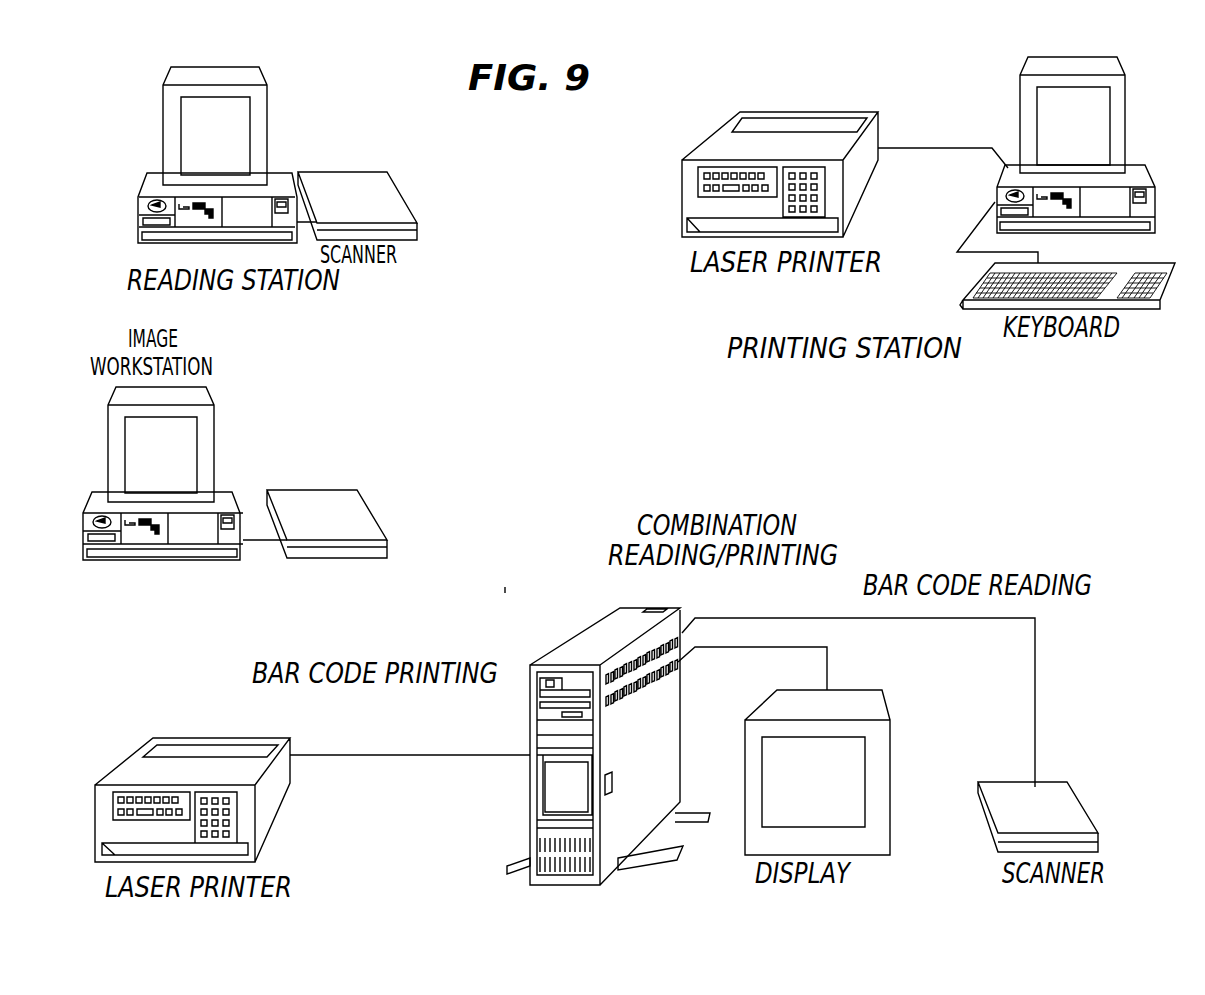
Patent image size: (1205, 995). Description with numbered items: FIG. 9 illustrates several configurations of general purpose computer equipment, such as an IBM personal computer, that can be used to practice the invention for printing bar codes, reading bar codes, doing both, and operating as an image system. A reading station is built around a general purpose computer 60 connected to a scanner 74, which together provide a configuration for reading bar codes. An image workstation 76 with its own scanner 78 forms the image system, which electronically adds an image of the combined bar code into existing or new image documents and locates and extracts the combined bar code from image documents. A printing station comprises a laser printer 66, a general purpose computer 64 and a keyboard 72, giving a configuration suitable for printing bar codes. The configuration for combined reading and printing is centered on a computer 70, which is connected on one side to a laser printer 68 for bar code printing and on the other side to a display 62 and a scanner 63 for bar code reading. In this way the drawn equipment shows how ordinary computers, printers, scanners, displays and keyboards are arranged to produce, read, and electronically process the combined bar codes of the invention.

The reading station computer 60 is at (233, 150).
The scanner 74 is at (410, 207).
The image workstation 76 is at (162, 467).
The scanner 78 is at (372, 505).
The laser printer 66 is at (823, 83).
The printing station computer 64 is at (1078, 147).
The keyboard 72 is at (963, 290).
The combination reading/printing computer 70 is at (607, 637).
The bar code printing laser printer 68 is at (207, 727).
The display 62 is at (892, 763).
The bar code reading scanner 63 is at (1078, 780).